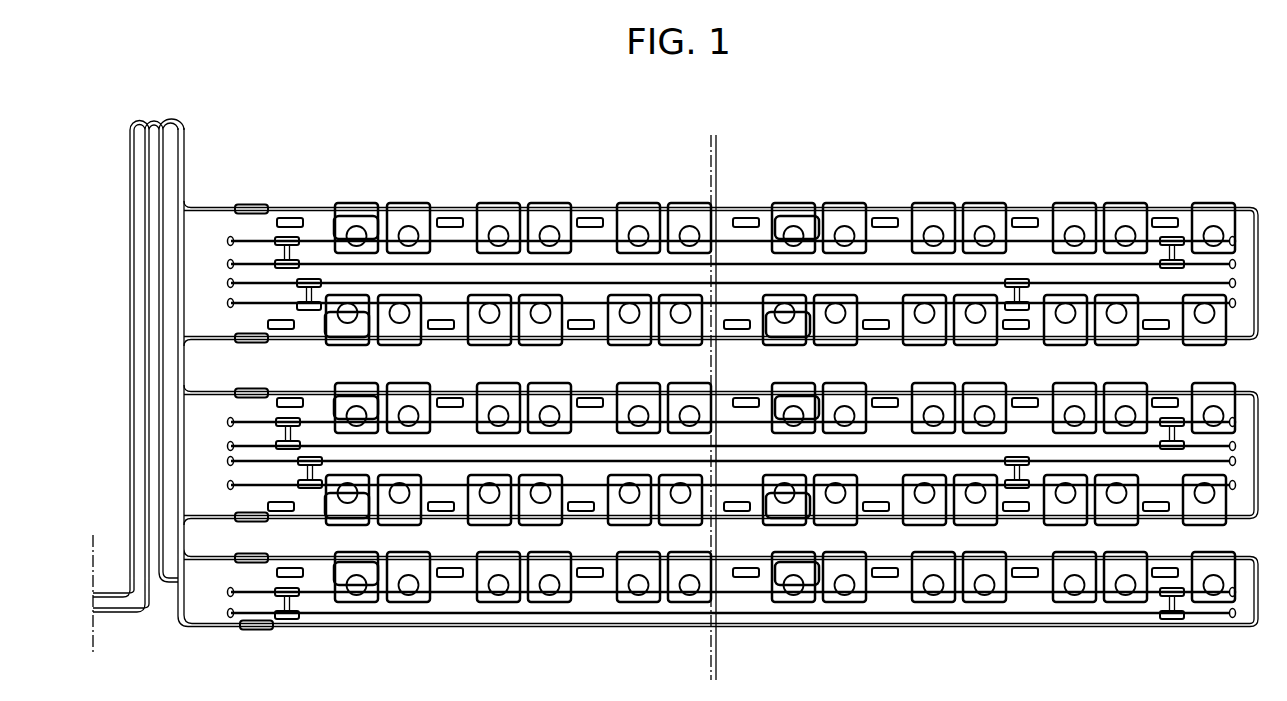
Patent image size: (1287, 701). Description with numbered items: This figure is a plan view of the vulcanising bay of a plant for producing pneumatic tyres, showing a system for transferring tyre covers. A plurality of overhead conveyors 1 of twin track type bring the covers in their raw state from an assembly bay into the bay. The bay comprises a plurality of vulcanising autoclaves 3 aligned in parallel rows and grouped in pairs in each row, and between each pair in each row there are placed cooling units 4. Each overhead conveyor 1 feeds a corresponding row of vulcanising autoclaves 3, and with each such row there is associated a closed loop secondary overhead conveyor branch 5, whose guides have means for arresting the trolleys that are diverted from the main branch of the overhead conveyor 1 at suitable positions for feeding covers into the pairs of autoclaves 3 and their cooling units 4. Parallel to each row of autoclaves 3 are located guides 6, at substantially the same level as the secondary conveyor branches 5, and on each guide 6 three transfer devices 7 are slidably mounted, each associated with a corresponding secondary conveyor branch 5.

The overhead conveyor 1 is at (206, 333).
The vulcanising autoclave 3 is at (618, 218).
The cooling unit 4 is at (446, 214).
The secondary overhead conveyor branch 5 is at (360, 218).
The guide 6 is at (745, 258).
The transfer device 7 is at (300, 249).